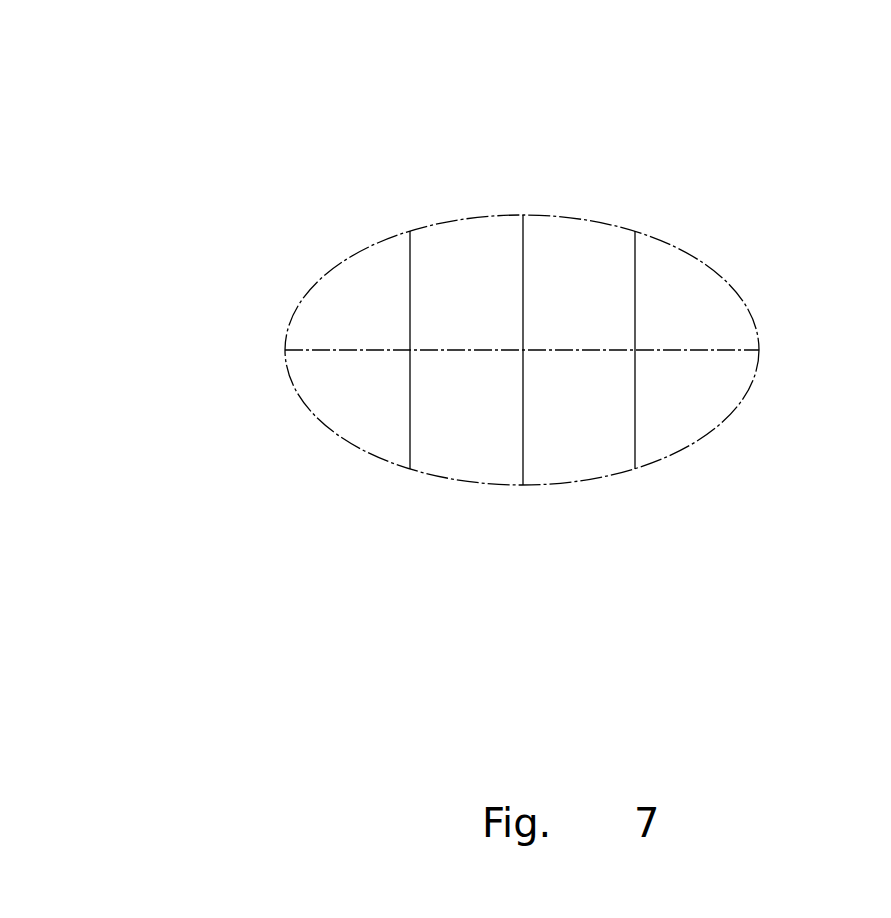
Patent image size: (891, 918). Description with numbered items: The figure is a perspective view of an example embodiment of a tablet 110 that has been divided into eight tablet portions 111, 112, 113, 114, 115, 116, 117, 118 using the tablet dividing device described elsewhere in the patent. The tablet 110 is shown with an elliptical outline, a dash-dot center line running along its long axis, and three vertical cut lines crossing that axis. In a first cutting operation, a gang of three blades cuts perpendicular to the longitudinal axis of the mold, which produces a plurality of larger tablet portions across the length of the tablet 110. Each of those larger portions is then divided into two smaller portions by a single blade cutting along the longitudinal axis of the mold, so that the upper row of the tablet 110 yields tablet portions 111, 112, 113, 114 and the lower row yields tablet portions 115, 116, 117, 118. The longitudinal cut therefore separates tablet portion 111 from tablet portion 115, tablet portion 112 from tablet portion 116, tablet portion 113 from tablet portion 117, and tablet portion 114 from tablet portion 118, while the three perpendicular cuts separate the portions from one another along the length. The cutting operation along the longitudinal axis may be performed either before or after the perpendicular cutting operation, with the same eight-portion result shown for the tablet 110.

The tablet 110 is at (242, 362).
The tablet portion 111 is at (367, 285).
The tablet portion 112 is at (469, 247).
The tablet portion 113 is at (579, 257).
The tablet portion 114 is at (700, 278).
The tablet portion 115 is at (350, 415).
The tablet portion 116 is at (473, 453).
The tablet portion 117 is at (578, 448).
The tablet portion 118 is at (683, 403).